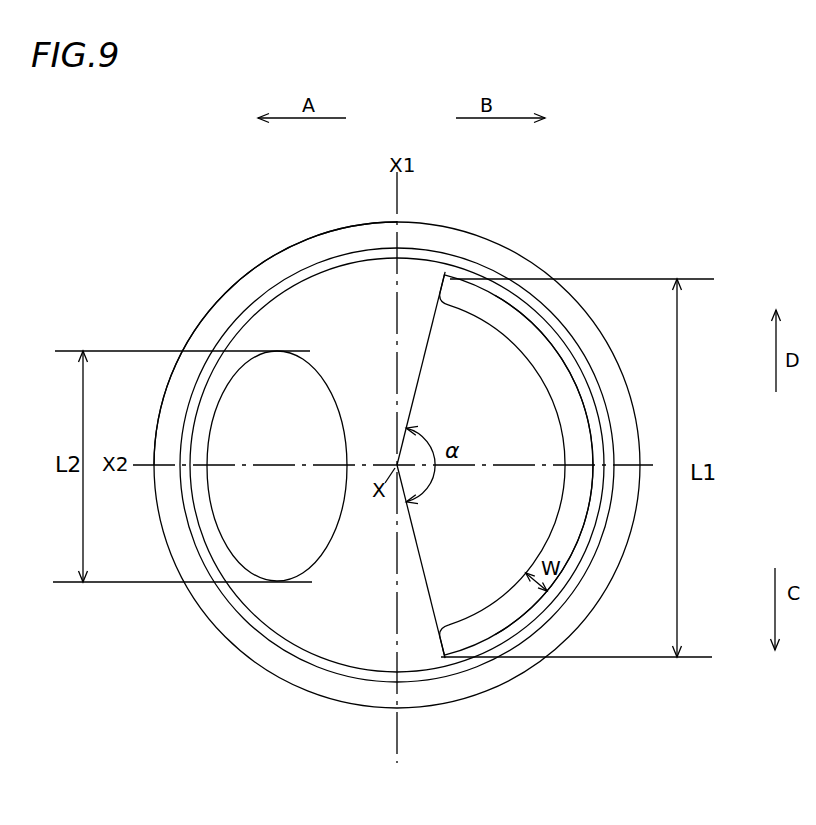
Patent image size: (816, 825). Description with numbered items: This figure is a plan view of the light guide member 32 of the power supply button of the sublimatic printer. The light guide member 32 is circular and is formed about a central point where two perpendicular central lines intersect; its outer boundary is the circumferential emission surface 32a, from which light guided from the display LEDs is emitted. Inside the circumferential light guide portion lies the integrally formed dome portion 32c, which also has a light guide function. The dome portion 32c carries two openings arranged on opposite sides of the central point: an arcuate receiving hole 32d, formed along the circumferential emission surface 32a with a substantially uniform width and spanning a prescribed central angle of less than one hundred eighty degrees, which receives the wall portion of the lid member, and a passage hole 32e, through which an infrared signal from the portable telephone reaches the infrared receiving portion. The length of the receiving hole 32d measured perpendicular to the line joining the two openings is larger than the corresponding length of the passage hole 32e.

The light guide member 32 is at (570, 238).
The circumferential emission surface 32a is at (252, 289).
The dome portion 32c is at (418, 287).
The receiving hole 32d is at (590, 432).
The passage hole 32e is at (210, 425).